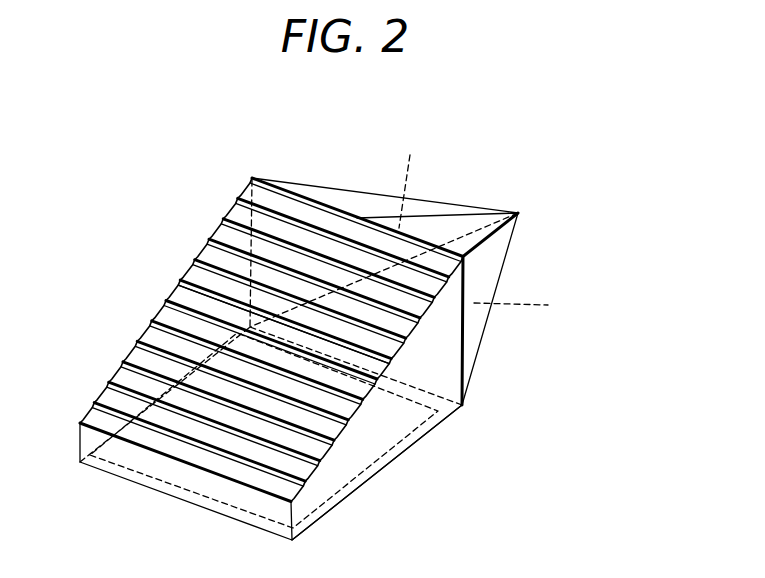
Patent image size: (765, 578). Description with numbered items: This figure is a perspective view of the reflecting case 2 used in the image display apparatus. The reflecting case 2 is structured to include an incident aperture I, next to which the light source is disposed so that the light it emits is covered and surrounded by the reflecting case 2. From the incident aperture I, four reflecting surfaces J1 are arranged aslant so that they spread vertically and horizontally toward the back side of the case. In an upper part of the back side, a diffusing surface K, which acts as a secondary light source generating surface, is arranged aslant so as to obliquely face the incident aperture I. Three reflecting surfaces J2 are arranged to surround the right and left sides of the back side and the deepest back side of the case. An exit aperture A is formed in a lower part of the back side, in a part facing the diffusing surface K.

The reflecting case 2 is at (335, 165).
The incident aperture I is at (520, 211).
The reflecting surfaces J1 is at (443, 203).
The reflecting surfaces J2 is at (137, 352).
The diffusing surface K is at (203, 276).
The exit aperture A is at (345, 462).